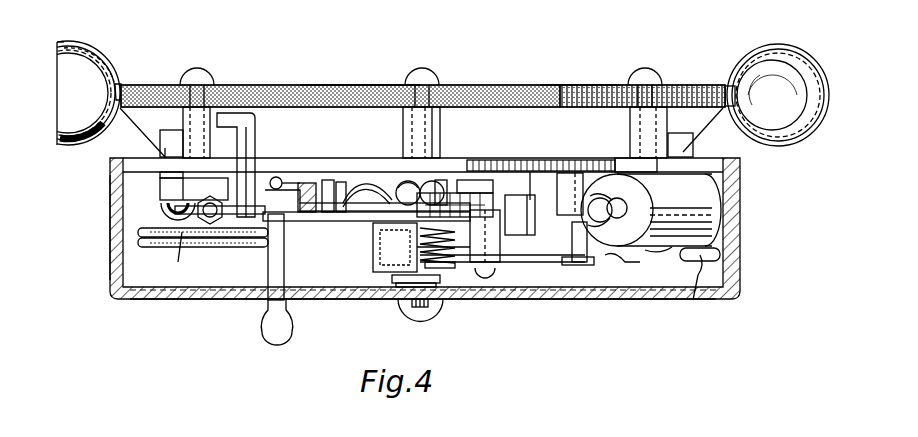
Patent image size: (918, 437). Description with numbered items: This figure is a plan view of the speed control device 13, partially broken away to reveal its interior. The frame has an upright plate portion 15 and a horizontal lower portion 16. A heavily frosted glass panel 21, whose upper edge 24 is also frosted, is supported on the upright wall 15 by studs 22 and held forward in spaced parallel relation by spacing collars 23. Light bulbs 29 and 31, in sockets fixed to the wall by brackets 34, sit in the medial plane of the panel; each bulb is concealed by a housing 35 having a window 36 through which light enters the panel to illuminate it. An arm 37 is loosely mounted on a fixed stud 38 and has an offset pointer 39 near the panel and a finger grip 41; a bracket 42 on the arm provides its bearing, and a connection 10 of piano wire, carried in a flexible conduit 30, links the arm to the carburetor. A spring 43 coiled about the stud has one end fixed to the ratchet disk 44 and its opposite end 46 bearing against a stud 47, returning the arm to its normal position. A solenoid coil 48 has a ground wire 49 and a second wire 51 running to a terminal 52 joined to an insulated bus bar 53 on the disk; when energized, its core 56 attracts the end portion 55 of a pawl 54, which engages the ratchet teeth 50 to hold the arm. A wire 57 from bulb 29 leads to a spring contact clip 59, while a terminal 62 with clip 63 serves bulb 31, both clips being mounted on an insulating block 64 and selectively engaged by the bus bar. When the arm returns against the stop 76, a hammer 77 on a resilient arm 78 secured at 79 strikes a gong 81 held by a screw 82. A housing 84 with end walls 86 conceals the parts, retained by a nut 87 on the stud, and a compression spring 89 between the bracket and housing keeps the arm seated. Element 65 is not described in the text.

The connection 10 is at (265, 240).
The speed control device 13 is at (575, 78).
The upright plate portion 15 is at (535, 160).
The horizontal lower portion 16 is at (155, 275).
The panel 21 is at (355, 82).
The studs 22 is at (190, 74).
The spacing collars 23 is at (184, 121).
The upper edge 24 is at (268, 85).
The light bulb 29 is at (108, 62).
The flexible conduit 30 is at (135, 228).
The light bulb 31 is at (768, 62).
The brackets 34 is at (102, 143).
The housings 35 is at (86, 64).
The window 36 is at (119, 82).
The arm 37 is at (318, 221).
The stud 38 is at (447, 268).
The pointer 39 is at (228, 112).
The finger grip 41 is at (268, 332).
The bracket 42 is at (373, 258).
The spring 43 is at (458, 248).
The ratchet disk 44 is at (350, 211).
The opposite end of spring 46 is at (530, 263).
The stud 47 is at (578, 266).
The solenoid coil 48 is at (707, 220).
The wire 49 is at (693, 300).
The ratchet teeth 50 is at (504, 226).
The wire 51 is at (440, 180).
The terminal 52 is at (406, 181).
The bus bar 53 is at (445, 190).
The pawl 54 is at (533, 210).
The end portion 55 is at (572, 176).
The core 56 is at (655, 247).
The wire 57 is at (178, 262).
The spring contact clip 59 is at (366, 184).
The terminal 62 is at (490, 180).
The spring contact clip 63 is at (496, 193).
The insulating block 64 is at (517, 160).
The strip 65 is at (140, 246).
The stop 76 is at (303, 180).
The hammer 77 is at (277, 177).
The resilient arm 78 is at (300, 183).
The securing point 79 is at (326, 180).
The gong 81 is at (176, 190).
The screw 82 is at (165, 206).
The housing 84 is at (213, 300).
The end walls 86 is at (140, 230).
The nut 87 is at (410, 325).
The compression spring 89 is at (395, 284).